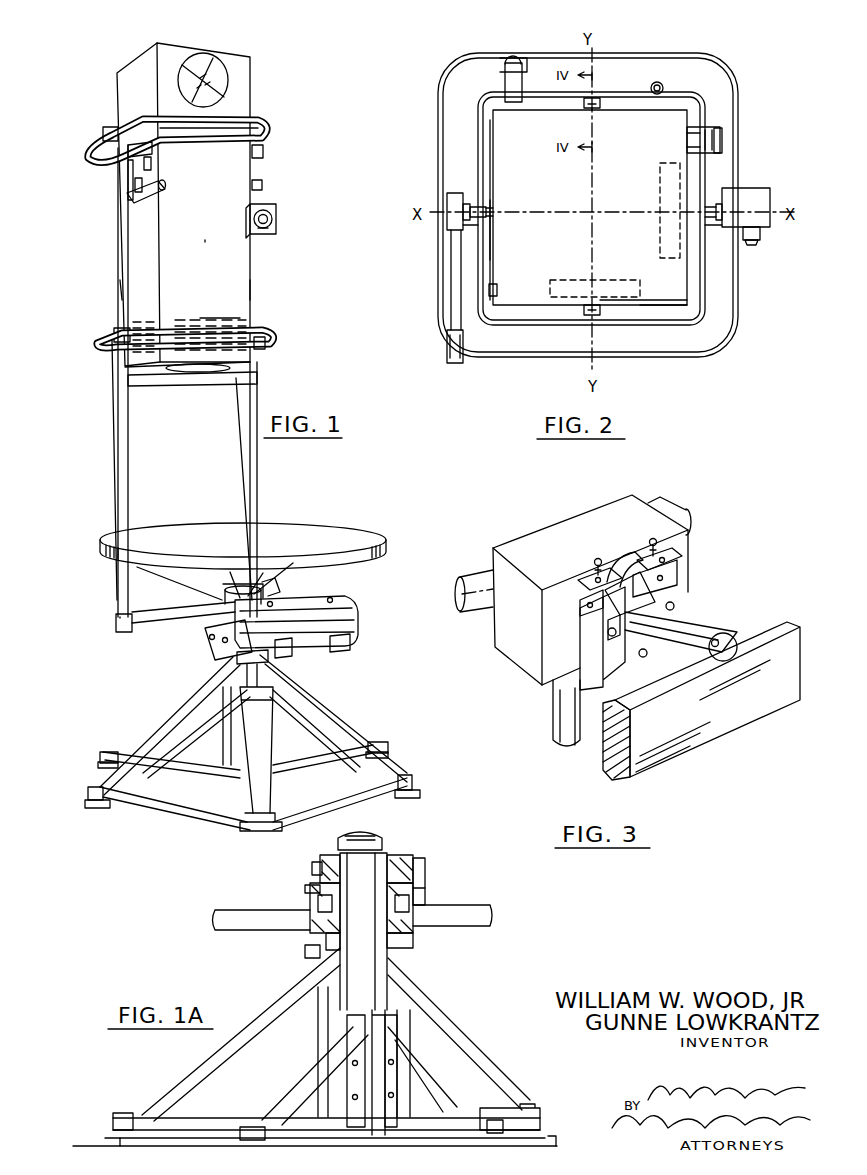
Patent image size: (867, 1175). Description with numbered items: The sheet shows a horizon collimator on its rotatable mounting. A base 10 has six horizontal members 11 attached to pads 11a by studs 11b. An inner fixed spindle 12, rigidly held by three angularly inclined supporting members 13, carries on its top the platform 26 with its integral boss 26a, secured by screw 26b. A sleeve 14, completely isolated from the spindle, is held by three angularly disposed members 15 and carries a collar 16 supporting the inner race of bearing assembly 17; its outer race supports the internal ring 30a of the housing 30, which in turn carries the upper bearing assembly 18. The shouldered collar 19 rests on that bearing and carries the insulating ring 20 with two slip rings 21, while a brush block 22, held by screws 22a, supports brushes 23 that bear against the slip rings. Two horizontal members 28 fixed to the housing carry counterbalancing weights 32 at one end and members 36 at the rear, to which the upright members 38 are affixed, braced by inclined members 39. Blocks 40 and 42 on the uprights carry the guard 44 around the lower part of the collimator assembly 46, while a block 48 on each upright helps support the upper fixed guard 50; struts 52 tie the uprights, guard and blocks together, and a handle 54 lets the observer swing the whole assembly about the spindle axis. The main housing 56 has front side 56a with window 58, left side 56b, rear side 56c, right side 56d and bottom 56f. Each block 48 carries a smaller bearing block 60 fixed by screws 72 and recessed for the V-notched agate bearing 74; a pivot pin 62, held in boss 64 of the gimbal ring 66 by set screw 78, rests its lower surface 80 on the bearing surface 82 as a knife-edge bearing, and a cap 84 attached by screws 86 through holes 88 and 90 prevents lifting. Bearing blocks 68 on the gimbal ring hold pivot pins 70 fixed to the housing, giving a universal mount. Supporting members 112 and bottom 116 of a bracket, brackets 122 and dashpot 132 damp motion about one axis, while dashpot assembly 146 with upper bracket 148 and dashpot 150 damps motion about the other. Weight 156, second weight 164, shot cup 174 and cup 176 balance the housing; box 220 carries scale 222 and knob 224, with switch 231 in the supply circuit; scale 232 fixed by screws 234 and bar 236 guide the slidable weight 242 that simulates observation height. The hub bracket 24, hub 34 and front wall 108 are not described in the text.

In FIG. 1, the base 10 is at (344, 710).
In FIG. 1A, the base 10 is at (486, 1034).
In FIG. 1, the horizontal members 11 is at (302, 790).
In FIG. 1A, the horizontal members 11 is at (212, 1132).
In FIG. 1, the pads 11a is at (103, 770).
In FIG. 1A, the pads 11a is at (108, 1142).
In FIG. 1, the studs 11b is at (402, 785).
In FIG. 1A, the studs 11b is at (122, 1127).
In FIG. 1, the inner fixed spindle 12 is at (262, 690).
In FIG. 1A, the inner fixed spindle 12 is at (365, 975).
In FIG. 1, the angularly inclined supporting members 13 is at (208, 712).
In FIG. 1A, the angularly inclined supporting members 13 is at (316, 1073).
In FIG. 1, the sleeve 14 is at (236, 664).
In FIG. 1A, the sleeve 14 is at (386, 968).
In FIG. 1, the angularly disposed members 15 is at (180, 712).
In FIG. 1A, the angularly disposed members 15 is at (280, 1020).
In FIG. 1, the collar 16 is at (222, 650).
In FIG. 1A, the collar 16 is at (330, 962).
In FIG. 1A, the bearing assembly 17 is at (310, 952).
In FIG. 1A, the upper bearing assembly 18 is at (306, 888).
In FIG. 1A, the shouldered collar 19 is at (338, 862).
In FIG. 1A, the insulating ring 20 is at (322, 862).
In FIG. 1A, the slip rings 21 is at (316, 873).
In FIG. 1A, the brush block 22 is at (423, 885).
In FIG. 1A, the screws 22a is at (425, 897).
In FIG. 1A, the brushes 23 is at (410, 868).
In FIG. 1, the hub bracket 24 is at (285, 592).
In FIG. 1, the platform 26 is at (333, 535).
In FIG. 1, the integral boss 26a is at (236, 582).
In FIG. 1A, the integral boss 26a is at (380, 846).
In FIG. 1, the screw 26b is at (252, 582).
In FIG. 1A, the screw 26b is at (366, 846).
In FIG. 1, the horizontal members 28 is at (172, 627).
In FIG. 1A, the horizontal members 28 is at (244, 942).
In FIG. 1A, the housing 30 is at (310, 906).
In FIG. 1A, the internal ring 30a is at (420, 942).
In FIG. 1, the counterbalancing weights 32 is at (352, 614).
In FIG. 1, the hub 34 is at (211, 591).
In FIG. 1, the horizontal members 36 is at (126, 630).
In FIG. 1, the upright members 38 is at (258, 458).
In FIG. 3, the upright members 38 is at (570, 730).
In FIG. 1, the angularly inclined members 39 is at (282, 575).
In FIG. 1, the block 40 is at (121, 332).
In FIG. 1, the block 42 is at (263, 346).
In FIG. 1, the guard 44 is at (280, 340).
In FIG. 1, the collimator assembly 46 is at (266, 301).
In FIG. 1, the block 48 is at (108, 130).
In FIG. 2, the block 48 is at (743, 196).
In FIG. 3, the block 48 is at (540, 535).
In FIG. 1, the upper fixed guard 50 is at (272, 140).
In FIG. 2, the upper fixed guard 50 is at (503, 360).
In FIG. 3, the upper fixed guard 50 is at (480, 588).
In FIG. 1, the struts 52 is at (108, 342).
In FIG. 1, the handle 54 is at (142, 200).
In FIG. 2, the handle 54 is at (450, 352).
In FIG. 1, the main housing 56 is at (110, 68).
In FIG. 1, the front side 56a is at (253, 319).
In FIG. 2, the front side 56a is at (660, 306).
In FIG. 1, the left side 56b is at (135, 290).
In FIG. 2, the left side 56b is at (490, 165).
In FIG. 2, the rear side 56c is at (612, 105).
In FIG. 2, the right side 56d is at (702, 298).
In FIG. 1, the bottom 56f is at (249, 372).
In FIG. 1, the window 58 is at (225, 80).
In FIG. 2, the bearing block 60 is at (470, 232).
In FIG. 3, the bearing block 60 is at (588, 668).
In FIG. 2, the pivot pin 62 is at (469, 204).
In FIG. 3, the pivot pin 62 is at (690, 627).
In FIG. 2, the boss 64 is at (706, 210).
In FIG. 3, the boss 64 is at (737, 648).
In FIG. 1, the gimbal ring 66 is at (225, 138).
In FIG. 2, the gimbal ring 66 is at (706, 292).
In FIG. 2, the bearing blocks 68 is at (586, 103).
In FIG. 2, the pivot pin 70 is at (596, 105).
In FIG. 3, the screws 72 is at (612, 637).
In FIG. 3, the V-notched agate bearing 74 is at (675, 606).
In FIG. 3, the set screw 78 is at (715, 652).
In FIG. 3, the lower surface 80 is at (647, 654).
In FIG. 3, the lower surface 82 is at (630, 593).
In FIG. 3, the cap 84 is at (614, 562).
In FIG. 3, the screws 86 is at (597, 568).
In FIG. 3, the holes 88 is at (586, 583).
In FIG. 3, the holes 90 is at (678, 584).
In FIG. 1, the front wall 108 is at (148, 253).
In FIG. 2, the angularly disposed supporting members 112 is at (688, 146).
In FIG. 2, the bottom 116 is at (722, 135).
In FIG. 2, the brackets 122 is at (718, 128).
In FIG. 2, the dashpot 132 is at (722, 143).
In FIG. 2, the dashpot assembly 146 is at (492, 67).
In FIG. 2, the upper bracket 148 is at (506, 88).
In FIG. 2, the dashpot 150 is at (513, 58).
In FIG. 2, the weight 156 is at (668, 252).
In FIG. 2, the second weight 164 is at (478, 220).
In FIG. 1, the shot cup 174 is at (130, 188).
In FIG. 2, the shot cup 174 is at (478, 212).
In FIG. 2, the cup 176 is at (659, 86).
In FIG. 1, the box 220 is at (270, 238).
In FIG. 2, the box 220 is at (757, 238).
In FIG. 1, the scale 222 is at (275, 214).
In FIG. 1, the knob 224 is at (278, 226).
In FIG. 2, the knob 224 is at (752, 243).
In FIG. 1, the switch 231 is at (263, 186).
In FIG. 2, the scale 232 is at (498, 257).
In FIG. 1, the screws 234 is at (150, 150).
In FIG. 1, the bar 236 is at (126, 176).
In FIG. 1, the slidable weight 242 is at (152, 165).
In FIG. 2, the slidable weight 242 is at (498, 293).